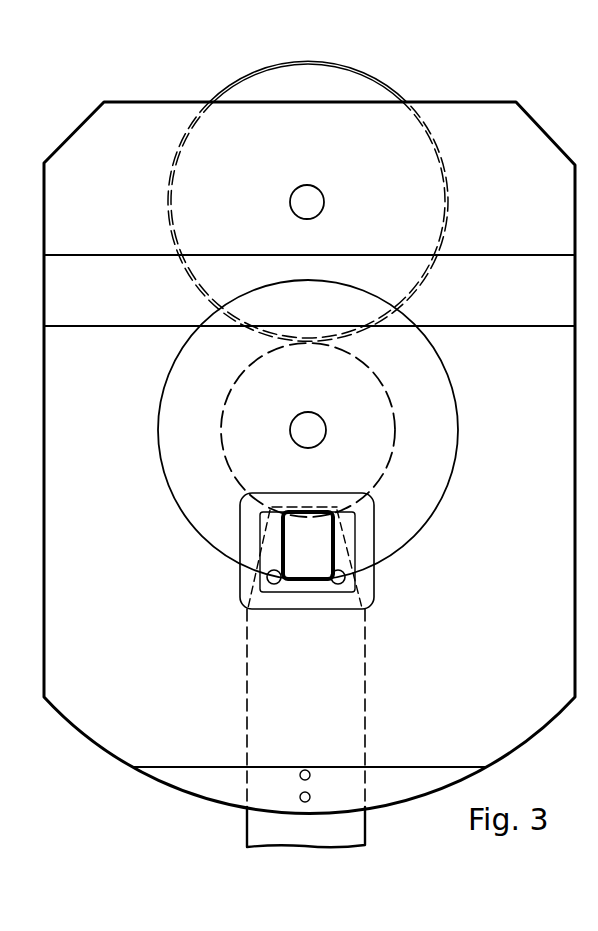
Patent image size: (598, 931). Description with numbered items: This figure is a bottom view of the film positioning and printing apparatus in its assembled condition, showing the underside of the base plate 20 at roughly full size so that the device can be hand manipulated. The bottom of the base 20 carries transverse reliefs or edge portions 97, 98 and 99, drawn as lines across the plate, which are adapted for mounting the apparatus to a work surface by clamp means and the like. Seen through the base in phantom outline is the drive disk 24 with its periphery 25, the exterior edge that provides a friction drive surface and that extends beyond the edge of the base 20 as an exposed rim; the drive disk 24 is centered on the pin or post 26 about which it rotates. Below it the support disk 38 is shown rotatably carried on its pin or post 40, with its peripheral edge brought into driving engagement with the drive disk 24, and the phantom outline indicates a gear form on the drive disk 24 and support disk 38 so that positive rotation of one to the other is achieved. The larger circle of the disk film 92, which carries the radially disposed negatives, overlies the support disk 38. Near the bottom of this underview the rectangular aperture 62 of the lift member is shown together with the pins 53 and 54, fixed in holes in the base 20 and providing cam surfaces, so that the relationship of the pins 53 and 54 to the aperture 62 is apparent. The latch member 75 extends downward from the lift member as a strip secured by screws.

The base plate 20 is at (508, 738).
The drive disk 24 is at (410, 170).
The periphery 25 is at (380, 83).
The pin or post 26 is at (327, 201).
The support disk 38 is at (358, 393).
The pin or post 40 is at (308, 422).
The pin 53 is at (346, 578).
The pin 54 is at (268, 578).
The aperture 62 is at (323, 538).
The latch member 75 is at (355, 826).
The disk film 92 is at (433, 420).
The transverse relief or edge portion 97 is at (423, 767).
The transverse relief or edge portion 98 is at (483, 326).
The transverse relief or edge portion 99 is at (495, 256).